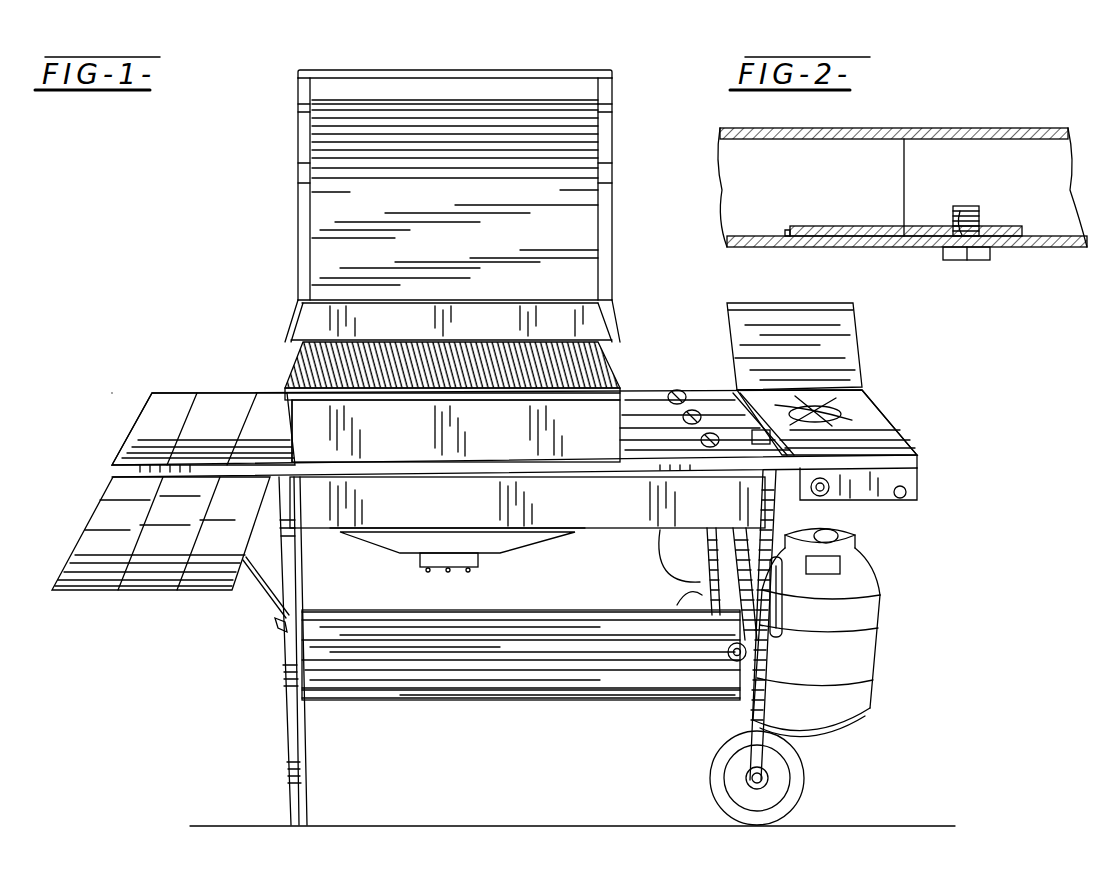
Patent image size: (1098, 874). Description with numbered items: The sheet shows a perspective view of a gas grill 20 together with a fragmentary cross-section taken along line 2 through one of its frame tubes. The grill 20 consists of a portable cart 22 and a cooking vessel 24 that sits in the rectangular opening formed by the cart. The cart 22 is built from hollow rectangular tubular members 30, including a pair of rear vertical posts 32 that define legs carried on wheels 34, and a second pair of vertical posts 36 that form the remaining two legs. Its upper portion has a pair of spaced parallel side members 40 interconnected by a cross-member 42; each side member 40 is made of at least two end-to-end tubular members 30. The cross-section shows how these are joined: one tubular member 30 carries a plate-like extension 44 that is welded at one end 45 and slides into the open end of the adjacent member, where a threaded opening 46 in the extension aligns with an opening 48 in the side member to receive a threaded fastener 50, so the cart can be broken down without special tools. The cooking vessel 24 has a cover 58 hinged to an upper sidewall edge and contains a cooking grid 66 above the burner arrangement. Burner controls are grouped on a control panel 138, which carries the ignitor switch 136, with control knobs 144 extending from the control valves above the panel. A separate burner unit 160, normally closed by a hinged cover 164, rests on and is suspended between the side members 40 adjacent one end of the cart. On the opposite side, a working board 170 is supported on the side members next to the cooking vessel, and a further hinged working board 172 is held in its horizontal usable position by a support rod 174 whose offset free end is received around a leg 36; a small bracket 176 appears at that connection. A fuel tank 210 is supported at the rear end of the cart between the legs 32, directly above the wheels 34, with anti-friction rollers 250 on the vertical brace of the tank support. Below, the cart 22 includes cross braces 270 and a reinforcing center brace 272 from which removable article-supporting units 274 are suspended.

In FIG. 1, the section line 2— 2 is at (447, 500).
In FIG. 1, the gas grill 20 is at (150, 348).
In FIG. 1, the portable cart 22 is at (280, 698).
In FIG. 1, the cooking vessel 24 is at (277, 332).
In FIG. 2, the tubular member 30 is at (748, 127).
In FIG. 1, the rear vertical post 32 is at (757, 703).
In FIG. 1, the wheel 34 is at (800, 788).
In FIG. 1, the vertical post 36 is at (293, 750).
In FIG. 1, the side member 40 is at (166, 392).
In FIG. 1, the cross-member 42 is at (284, 446).
In FIG. 2, the plate-like extension 44 is at (872, 232).
In FIG. 2, the welded end 45 is at (785, 232).
In FIG. 2, the threaded opening 46 is at (968, 225).
In FIG. 2, the opening 48 is at (985, 250).
In FIG. 2, the threaded fastener 50 is at (960, 253).
In FIG. 1, the cover 58 is at (290, 153).
In FIG. 1, the cooking grid 66 is at (395, 345).
In FIG. 1, the switch 136 is at (738, 400).
In FIG. 1, the control panel 138 is at (710, 397).
In FIG. 1, the control knob 144 is at (672, 390).
In FIG. 1, the separate burner unit 160 is at (903, 423).
In FIG. 1, the cover 164 is at (850, 364).
In FIG. 1, the working board 170 is at (150, 425).
In FIG. 1, the working board 172 is at (112, 515).
In FIG. 1, the support rod 174 is at (260, 593).
In FIG. 1, the brace bracket 176 is at (279, 632).
In FIG. 1, the fuel tank 210 is at (880, 655).
In FIG. 1, the rollers 250 is at (725, 633).
In FIG. 1, the cross brace 270 is at (305, 673).
In FIG. 1, the reinforcing center brace 272 is at (387, 655).
In FIG. 1, the article-supporting unit 274 is at (515, 628).